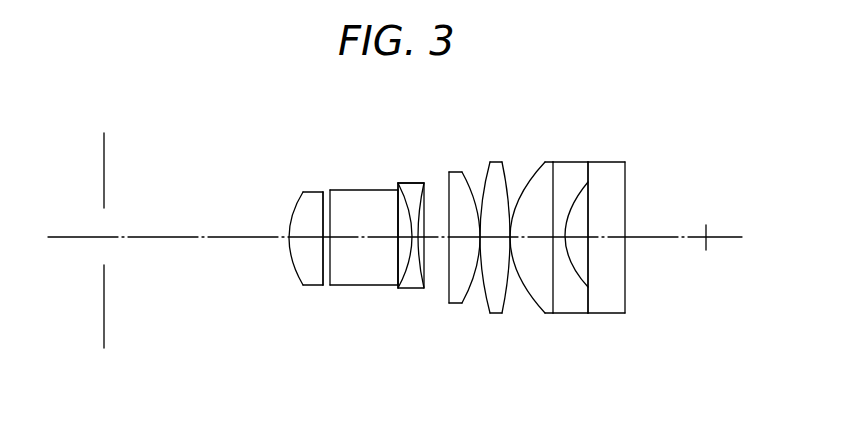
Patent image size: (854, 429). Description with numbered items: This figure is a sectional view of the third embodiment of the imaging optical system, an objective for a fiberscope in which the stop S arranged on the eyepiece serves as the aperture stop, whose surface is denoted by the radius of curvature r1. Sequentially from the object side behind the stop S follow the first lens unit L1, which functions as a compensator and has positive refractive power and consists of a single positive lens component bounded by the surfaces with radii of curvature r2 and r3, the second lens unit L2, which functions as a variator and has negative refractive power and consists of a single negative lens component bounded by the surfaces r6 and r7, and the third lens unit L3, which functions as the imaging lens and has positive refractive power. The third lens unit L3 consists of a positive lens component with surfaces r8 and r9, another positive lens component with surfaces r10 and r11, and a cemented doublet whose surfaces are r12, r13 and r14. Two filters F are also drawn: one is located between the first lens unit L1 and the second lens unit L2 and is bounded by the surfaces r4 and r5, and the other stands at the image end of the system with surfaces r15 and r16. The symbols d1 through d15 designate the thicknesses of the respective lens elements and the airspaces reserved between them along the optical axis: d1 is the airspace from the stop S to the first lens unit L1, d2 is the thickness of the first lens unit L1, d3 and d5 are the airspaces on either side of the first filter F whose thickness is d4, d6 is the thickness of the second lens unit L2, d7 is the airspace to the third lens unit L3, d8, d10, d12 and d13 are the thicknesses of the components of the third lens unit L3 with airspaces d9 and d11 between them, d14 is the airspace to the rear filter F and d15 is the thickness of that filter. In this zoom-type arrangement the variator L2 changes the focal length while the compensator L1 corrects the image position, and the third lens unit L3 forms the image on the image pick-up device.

The stop S is at (102, 222).
The radius of curvature r1 is at (103, 177).
The radius of curvature r2 is at (303, 193).
The radius of curvature r3 is at (310, 208).
The radius of curvature r4 is at (332, 210).
The radius of curvature r5 is at (398, 216).
The radius of curvature r6 is at (408, 197).
The radius of curvature r7 is at (417, 197).
The radius of curvature r8 is at (448, 197).
The radius of curvature r9 is at (476, 190).
The radius of curvature r10 is at (486, 176).
The radius of curvature r11 is at (509, 176).
The radius of curvature r12 is at (533, 185).
The radius of curvature r13 is at (556, 185).
The radius of curvature r14 is at (582, 185).
The radius of curvature r15 is at (592, 185).
The radius of curvature r16 is at (625, 182).
The airspace d1 is at (215, 238).
The lens thickness d2 is at (303, 238).
The airspace d3 is at (318, 240).
The filter thickness d4 is at (357, 240).
The airspace d5 is at (398, 250).
The lens thickness d6 is at (421, 250).
The airspace d7 is at (443, 245).
The lens thickness d8 is at (463, 242).
The airspace d9 is at (483, 242).
The lens thickness d10 is at (503, 242).
The airspace d11 is at (536, 245).
The lens thickness d12 is at (545, 312).
The lens thickness d13 is at (570, 312).
The airspace d14 is at (600, 312).
The filter thickness d15 is at (612, 238).
The first lens unit L1 is at (291, 175).
The second lens unit L2 is at (412, 202).
The third lens unit L3 is at (540, 223).
The filter F is at (364, 195).